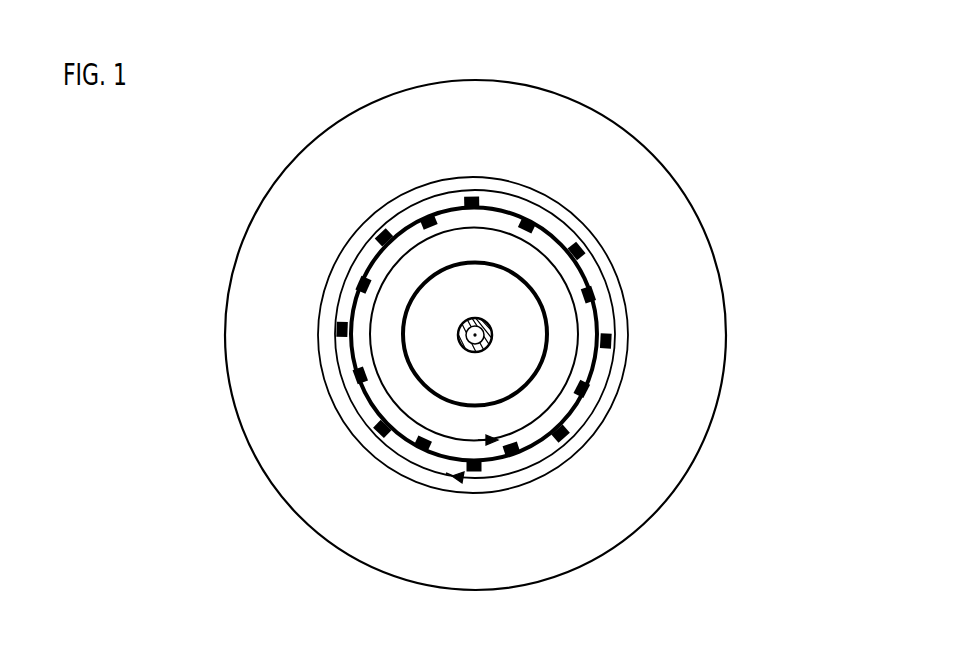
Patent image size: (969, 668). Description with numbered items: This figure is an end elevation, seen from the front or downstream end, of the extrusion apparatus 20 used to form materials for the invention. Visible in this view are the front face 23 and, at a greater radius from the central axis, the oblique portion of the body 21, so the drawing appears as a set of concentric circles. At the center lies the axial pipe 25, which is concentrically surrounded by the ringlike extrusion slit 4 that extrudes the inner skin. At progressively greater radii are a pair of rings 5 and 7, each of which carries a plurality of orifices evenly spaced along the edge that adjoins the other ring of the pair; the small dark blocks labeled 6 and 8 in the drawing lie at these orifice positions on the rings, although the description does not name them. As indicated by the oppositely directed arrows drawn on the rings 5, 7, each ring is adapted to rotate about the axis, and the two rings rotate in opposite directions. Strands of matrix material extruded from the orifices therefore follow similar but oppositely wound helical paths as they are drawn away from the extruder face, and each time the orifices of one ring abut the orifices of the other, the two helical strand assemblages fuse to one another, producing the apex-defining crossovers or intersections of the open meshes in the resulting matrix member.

The ringlike extrusion slit 4 is at (502, 267).
The ring 5 is at (503, 222).
The magnets 6 is at (428, 228).
The ring 7 is at (512, 207).
The stator poles 8 is at (478, 197).
The extrusion apparatus 20 is at (727, 357).
The body 21 is at (677, 182).
The front face 23 is at (628, 295).
The axial pipe 25 is at (468, 352).